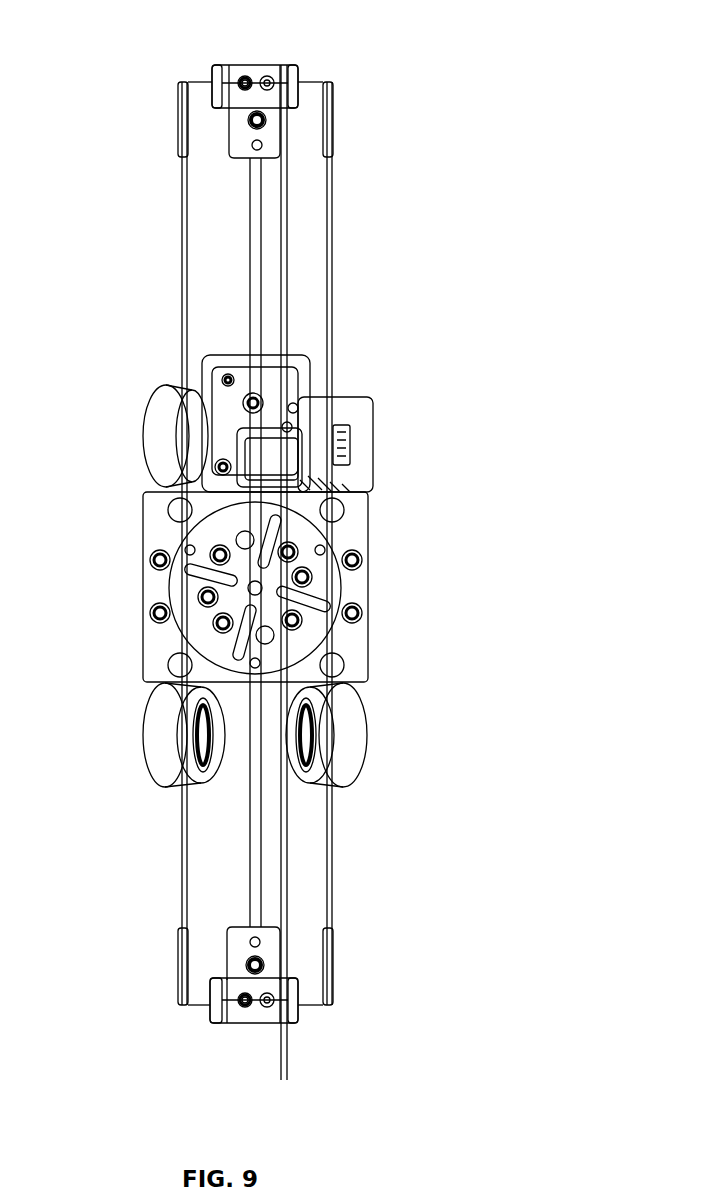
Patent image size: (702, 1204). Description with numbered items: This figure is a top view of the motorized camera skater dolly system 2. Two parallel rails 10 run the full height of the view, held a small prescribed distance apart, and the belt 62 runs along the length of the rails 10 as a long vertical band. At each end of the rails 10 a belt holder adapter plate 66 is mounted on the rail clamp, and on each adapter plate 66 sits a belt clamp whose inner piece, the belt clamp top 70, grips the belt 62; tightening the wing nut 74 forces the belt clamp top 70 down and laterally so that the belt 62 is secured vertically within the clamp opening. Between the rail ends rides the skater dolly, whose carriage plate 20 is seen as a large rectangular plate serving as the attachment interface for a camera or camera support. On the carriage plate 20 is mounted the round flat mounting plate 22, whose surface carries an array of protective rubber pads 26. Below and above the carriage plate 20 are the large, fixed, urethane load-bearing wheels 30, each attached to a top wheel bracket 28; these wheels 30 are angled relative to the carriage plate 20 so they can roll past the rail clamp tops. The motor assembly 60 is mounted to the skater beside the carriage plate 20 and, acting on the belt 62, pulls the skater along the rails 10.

The system 2 is at (485, 72).
The rails 10 is at (193, 210).
The carriage plate 20 is at (360, 640).
The flat mounting plate 22 is at (325, 583).
The protective rubber pads 26 is at (280, 522).
The top wheel bracket 28 is at (203, 707).
The load-bearing wheels 30 is at (343, 385).
The motor assembly 60 is at (350, 462).
The belt 62 is at (292, 256).
The belt holder adapter plate 66 is at (237, 140).
The belt clamp top 70 is at (262, 64).
The wing nut 74 is at (243, 78).